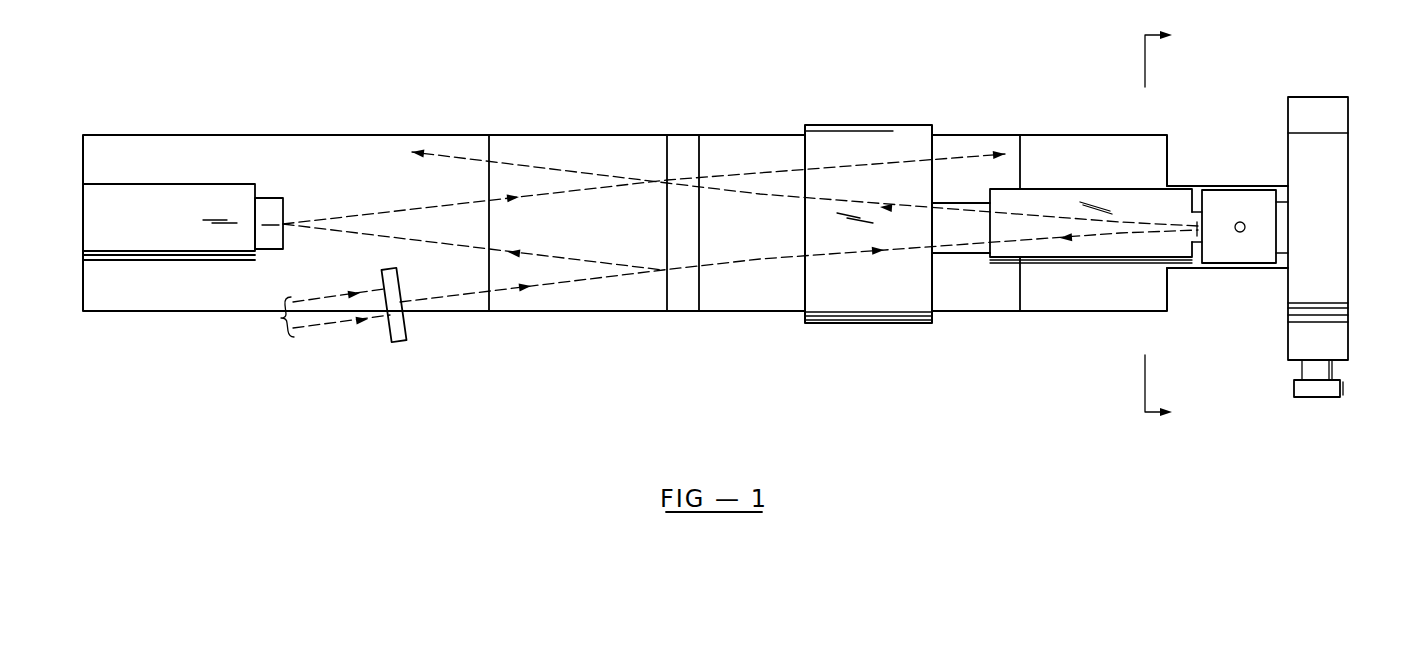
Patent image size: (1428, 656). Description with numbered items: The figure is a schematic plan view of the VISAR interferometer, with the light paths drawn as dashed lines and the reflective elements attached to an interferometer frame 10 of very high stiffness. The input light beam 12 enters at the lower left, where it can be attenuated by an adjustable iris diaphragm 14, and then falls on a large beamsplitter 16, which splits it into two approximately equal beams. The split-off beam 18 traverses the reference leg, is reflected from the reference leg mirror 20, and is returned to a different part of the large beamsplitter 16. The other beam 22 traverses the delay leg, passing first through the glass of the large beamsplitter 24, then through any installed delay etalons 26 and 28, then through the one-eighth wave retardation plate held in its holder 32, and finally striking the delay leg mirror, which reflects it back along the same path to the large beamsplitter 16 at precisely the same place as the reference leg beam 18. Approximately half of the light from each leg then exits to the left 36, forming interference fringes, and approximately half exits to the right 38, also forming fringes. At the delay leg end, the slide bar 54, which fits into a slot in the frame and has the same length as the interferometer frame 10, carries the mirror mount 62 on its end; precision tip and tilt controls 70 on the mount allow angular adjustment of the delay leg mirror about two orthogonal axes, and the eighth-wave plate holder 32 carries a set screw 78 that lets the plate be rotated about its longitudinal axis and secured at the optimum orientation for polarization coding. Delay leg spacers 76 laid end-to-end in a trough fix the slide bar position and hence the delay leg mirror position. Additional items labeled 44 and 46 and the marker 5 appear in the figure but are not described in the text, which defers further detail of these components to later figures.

The interferometer frame 10 is at (371, 134).
The input light beam 12 is at (286, 314).
The adjustable iris diaphragm 14 is at (401, 344).
The large beamsplitter 16 is at (665, 180).
The split-off beam 18 is at (581, 261).
The reference leg mirror 20 is at (284, 210).
The delay leg beam 22 is at (745, 262).
The glass of the large beamsplitter 24 is at (689, 148).
The delay etalon 26 is at (850, 124).
The delay etalon 28 is at (1091, 188).
The eighth-wave plate holder 32 is at (1219, 202).
The left exit 36 is at (461, 155).
The right exit 38 is at (959, 157).
The housing compartment 44 is at (566, 147).
The laser 46 is at (218, 205).
The slide bar 54 is at (1266, 270).
The mirror mount 62 is at (1346, 113).
The precision tip and tilt controls 70 is at (1342, 389).
The delay leg spacers 76 is at (1200, 237).
The set screw 78 is at (1241, 221).
The section line 5- 5 is at (1172, 224).